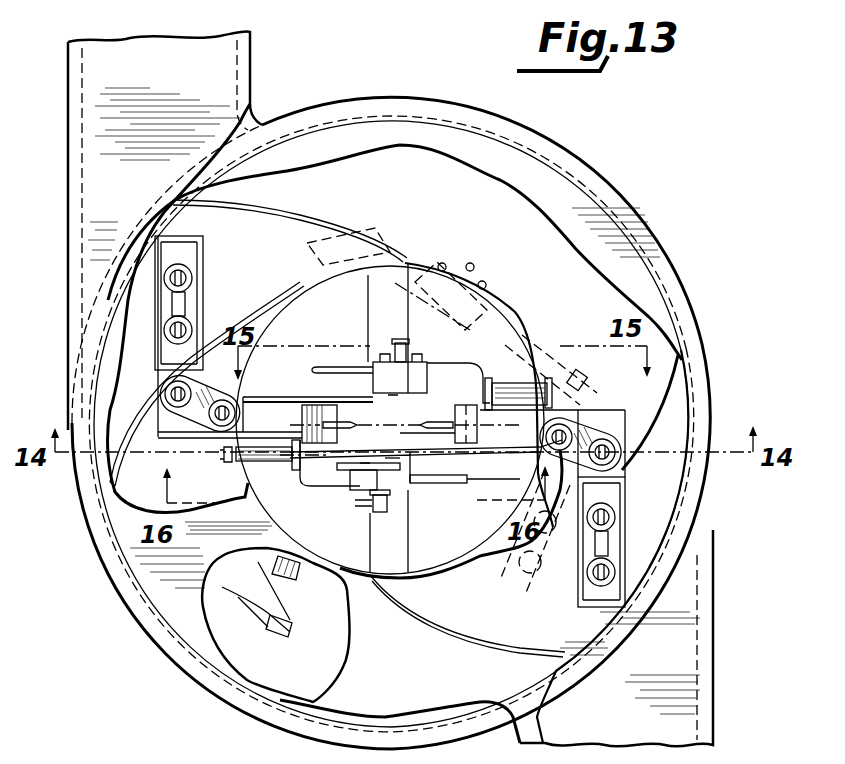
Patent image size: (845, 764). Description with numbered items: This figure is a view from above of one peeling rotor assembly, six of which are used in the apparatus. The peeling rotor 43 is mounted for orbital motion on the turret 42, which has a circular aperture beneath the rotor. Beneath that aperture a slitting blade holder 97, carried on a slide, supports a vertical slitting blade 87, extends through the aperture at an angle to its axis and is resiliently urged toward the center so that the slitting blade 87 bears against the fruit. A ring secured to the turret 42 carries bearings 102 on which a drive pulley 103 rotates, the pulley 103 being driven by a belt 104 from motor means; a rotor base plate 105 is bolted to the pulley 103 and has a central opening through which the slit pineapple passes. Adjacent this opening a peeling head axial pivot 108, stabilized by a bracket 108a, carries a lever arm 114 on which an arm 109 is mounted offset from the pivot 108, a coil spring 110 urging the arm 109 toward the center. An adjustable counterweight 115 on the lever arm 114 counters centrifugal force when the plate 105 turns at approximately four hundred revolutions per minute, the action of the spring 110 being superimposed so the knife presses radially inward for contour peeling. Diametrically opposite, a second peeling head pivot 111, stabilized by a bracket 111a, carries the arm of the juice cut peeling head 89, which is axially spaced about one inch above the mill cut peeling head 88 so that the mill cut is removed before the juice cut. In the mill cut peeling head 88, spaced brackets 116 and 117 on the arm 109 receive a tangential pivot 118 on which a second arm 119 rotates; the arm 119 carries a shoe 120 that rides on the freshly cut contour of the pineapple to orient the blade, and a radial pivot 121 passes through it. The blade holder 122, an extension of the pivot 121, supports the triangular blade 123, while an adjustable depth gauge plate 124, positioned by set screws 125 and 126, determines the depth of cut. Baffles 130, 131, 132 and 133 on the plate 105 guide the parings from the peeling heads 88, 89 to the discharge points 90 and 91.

The turret 42 is at (710, 341).
The peeling rotor 43 is at (535, 205).
The vertical slitting blade 87 is at (347, 424).
The mill cut peeling head 88 is at (463, 473).
The juice cut peeling head 89 is at (440, 262).
The discharge point 90 is at (661, 665).
The discharge point 91 is at (153, 74).
The slitting blade holder 97 is at (408, 565).
The bearings 102 is at (296, 583).
The drive pulley 103 is at (238, 598).
The belt 104 is at (279, 637).
The rotor base plate 105 is at (280, 558).
The peeling head axial pivot 108 is at (173, 408).
The bracket 108a is at (202, 400).
The arm 109 is at (197, 438).
The coil spring 110 is at (163, 390).
The second peeling head pivot 111 is at (618, 464).
The bracket 111a is at (583, 425).
The lever arm 114 is at (132, 413).
The adjustable counterweight 115 is at (200, 286).
The bracket 116 is at (237, 470).
The bracket 117 is at (292, 472).
The tangential pivot 118 is at (542, 358).
The second arm 119 is at (466, 361).
The shoe 120 is at (423, 367).
The radial pivot 121 is at (385, 350).
The blade holder 122 is at (315, 369).
The triangular peeling blade 123 is at (390, 460).
The depth gauge plate 124 is at (393, 395).
The set screw 125 is at (360, 508).
The set screw 126 is at (412, 486).
The baffle 130 is at (110, 482).
The baffle 131 is at (465, 637).
The baffle 132 is at (660, 410).
The baffle 133 is at (303, 213).